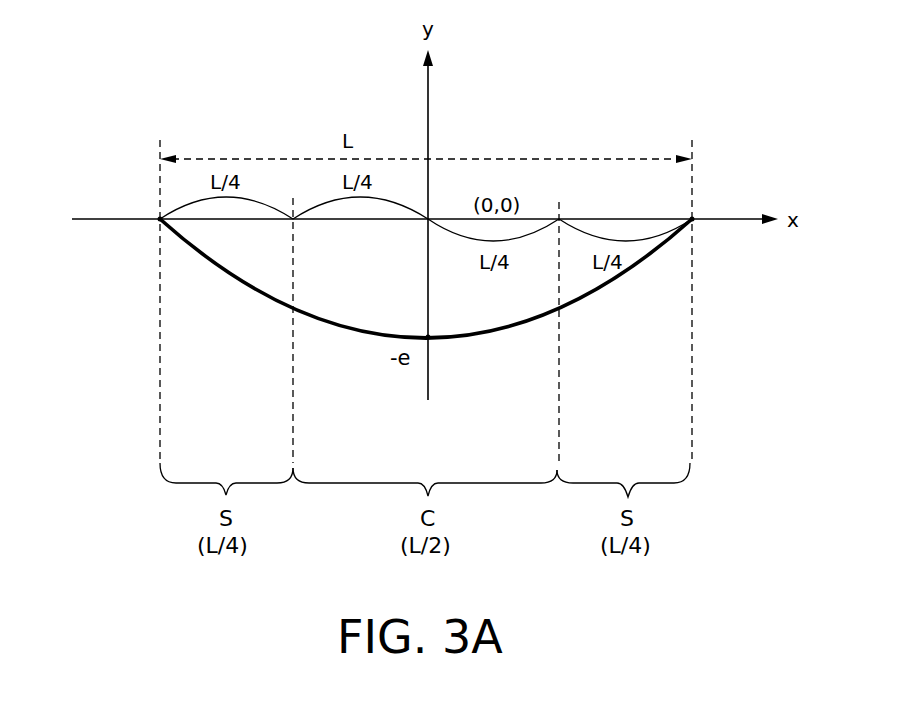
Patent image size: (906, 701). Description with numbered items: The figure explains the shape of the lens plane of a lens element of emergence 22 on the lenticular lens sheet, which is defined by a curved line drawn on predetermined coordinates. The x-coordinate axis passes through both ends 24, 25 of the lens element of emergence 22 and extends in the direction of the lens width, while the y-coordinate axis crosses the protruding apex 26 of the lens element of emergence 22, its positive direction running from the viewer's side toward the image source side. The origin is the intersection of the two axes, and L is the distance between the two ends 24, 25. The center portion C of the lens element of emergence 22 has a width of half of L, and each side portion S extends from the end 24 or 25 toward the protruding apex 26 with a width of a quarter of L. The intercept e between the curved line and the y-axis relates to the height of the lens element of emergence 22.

The lens element of emergence 22 is at (212, 280).
The end 24 is at (701, 208).
The end 25 is at (152, 207).
The protruding apex 26 is at (418, 324).